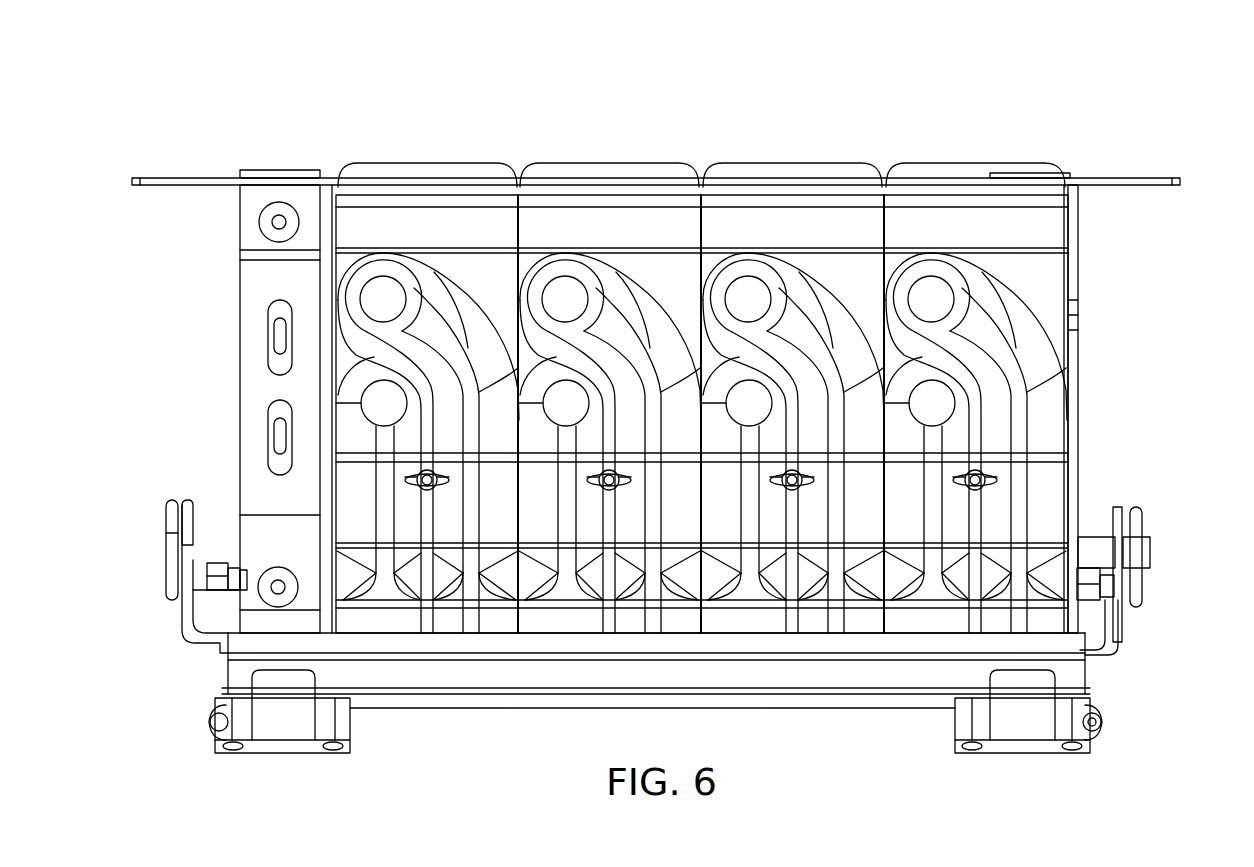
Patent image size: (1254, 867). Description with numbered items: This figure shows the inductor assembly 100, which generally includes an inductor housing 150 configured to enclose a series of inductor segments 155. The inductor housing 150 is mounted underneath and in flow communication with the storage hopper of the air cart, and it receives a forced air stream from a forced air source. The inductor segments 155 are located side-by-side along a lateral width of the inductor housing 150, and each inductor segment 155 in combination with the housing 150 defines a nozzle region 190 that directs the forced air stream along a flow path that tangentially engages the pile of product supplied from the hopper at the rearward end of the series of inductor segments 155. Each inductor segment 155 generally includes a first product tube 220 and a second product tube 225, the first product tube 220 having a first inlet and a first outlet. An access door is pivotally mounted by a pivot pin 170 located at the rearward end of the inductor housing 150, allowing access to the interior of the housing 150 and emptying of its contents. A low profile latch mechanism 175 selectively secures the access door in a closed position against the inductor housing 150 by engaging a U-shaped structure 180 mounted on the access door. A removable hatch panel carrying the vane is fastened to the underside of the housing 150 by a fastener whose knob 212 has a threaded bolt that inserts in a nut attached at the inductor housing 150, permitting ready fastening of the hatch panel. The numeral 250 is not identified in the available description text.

The inductor assembly 100 is at (219, 104).
The inductor housing 150 is at (1082, 350).
The inductor segments 155 is at (982, 162).
The pivot pin 170 is at (1158, 557).
The latch mechanism 175 is at (1126, 654).
The U-shaped structure 180 is at (1108, 726).
The nozzle region 190 is at (456, 623).
The knob 212 is at (308, 766).
The first product tube 220 is at (360, 497).
The second product tube 225 is at (468, 335).
The fluid ports 250 is at (386, 392).